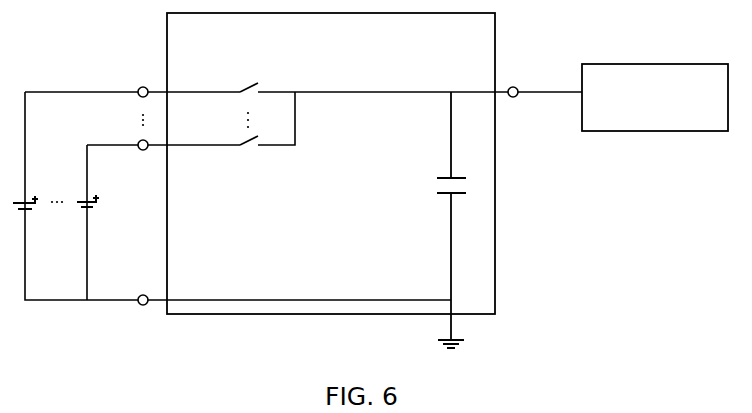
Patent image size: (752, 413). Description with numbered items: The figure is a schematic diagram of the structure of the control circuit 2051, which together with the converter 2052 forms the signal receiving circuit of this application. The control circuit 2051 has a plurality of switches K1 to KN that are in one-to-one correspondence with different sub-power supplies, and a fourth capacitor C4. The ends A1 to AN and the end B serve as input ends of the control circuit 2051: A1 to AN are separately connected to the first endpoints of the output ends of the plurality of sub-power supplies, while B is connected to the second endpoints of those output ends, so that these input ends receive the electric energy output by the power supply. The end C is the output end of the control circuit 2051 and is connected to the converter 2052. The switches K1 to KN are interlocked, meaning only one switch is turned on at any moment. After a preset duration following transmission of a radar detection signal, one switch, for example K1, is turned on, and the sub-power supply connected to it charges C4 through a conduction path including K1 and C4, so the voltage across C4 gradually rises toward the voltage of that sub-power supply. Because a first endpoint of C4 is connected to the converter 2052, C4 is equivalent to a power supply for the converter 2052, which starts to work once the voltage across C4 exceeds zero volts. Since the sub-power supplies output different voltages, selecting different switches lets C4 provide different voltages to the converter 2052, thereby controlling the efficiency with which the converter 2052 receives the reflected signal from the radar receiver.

The control circuit 2051 is at (331, 180).
The converter 2052 is at (655, 97).
The switch K1 is at (361, 77).
The switch KN is at (266, 136).
The fourth capacitor C4 is at (433, 220).
The input end A1 is at (132, 80).
The input end AN is at (163, 159).
The input end B is at (138, 316).
The output end C is at (538, 80).